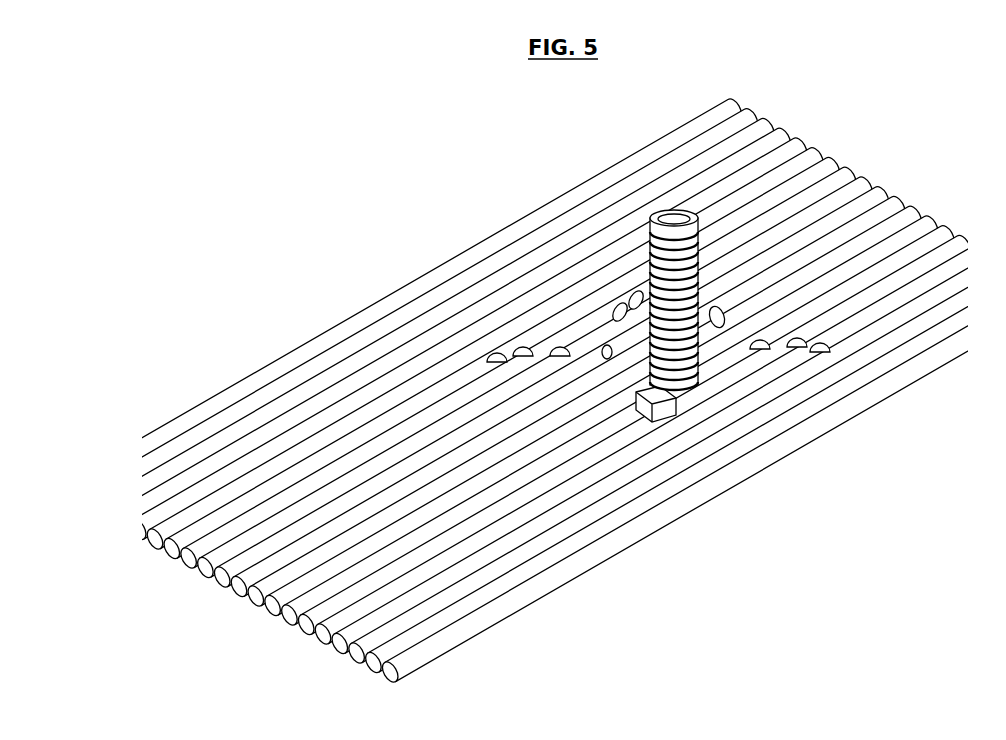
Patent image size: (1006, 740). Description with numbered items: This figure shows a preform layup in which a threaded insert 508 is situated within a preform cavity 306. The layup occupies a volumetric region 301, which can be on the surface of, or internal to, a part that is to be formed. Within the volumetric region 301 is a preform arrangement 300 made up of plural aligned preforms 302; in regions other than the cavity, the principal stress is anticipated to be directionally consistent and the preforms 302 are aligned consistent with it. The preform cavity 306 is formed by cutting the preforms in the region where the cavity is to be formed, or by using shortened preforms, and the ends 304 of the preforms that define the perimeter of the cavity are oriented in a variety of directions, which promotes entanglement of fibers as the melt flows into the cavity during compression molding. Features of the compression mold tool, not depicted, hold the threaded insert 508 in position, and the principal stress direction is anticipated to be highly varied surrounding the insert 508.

The preform arrangement 300 is at (533, 390).
The volumetric region 301 is at (162, 436).
The aligned preforms 302 is at (594, 235).
The ends of the preforms 304 is at (716, 343).
The preform cavity 306 is at (722, 352).
The threaded insert 508 is at (674, 220).